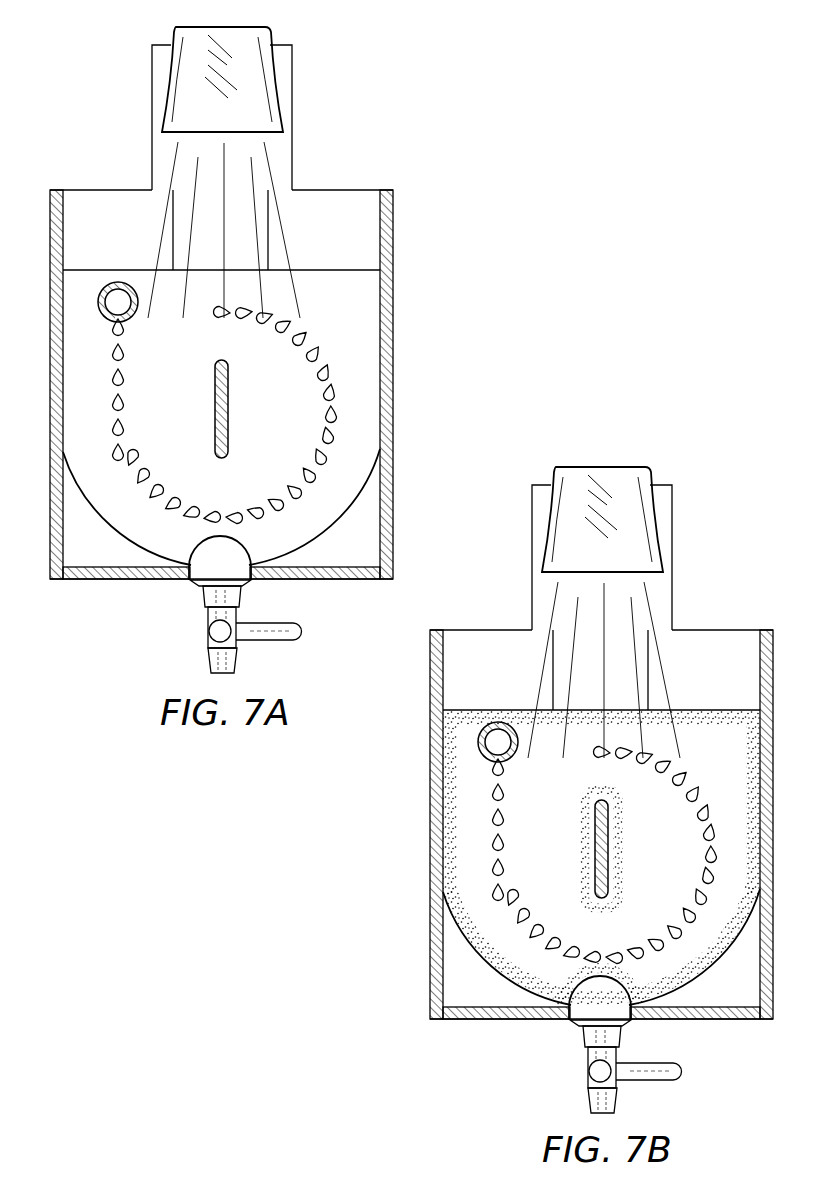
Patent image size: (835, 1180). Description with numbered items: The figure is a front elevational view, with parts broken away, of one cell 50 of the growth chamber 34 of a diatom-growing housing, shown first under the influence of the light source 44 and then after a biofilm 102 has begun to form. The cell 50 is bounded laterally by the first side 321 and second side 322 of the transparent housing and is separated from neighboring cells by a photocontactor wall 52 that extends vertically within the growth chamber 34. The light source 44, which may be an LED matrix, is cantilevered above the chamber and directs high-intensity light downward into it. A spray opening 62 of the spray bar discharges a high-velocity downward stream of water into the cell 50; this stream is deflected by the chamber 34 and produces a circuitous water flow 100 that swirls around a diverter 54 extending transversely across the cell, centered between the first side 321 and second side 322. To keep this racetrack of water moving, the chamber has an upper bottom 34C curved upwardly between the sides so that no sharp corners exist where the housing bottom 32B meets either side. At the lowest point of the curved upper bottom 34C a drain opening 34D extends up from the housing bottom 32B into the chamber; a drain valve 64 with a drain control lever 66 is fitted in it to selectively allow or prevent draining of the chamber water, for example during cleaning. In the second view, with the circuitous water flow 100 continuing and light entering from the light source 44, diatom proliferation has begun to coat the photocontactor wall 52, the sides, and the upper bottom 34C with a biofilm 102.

In FIG. 7A, the light source 44 is at (283, 77).
In FIG. 7B, the light source 44 is at (627, 612).
In FIG. 7A, the second side 322 is at (50, 224).
In FIG. 7B, the second side 322 is at (398, 824).
In FIG. 7A, the first side 321 is at (393, 241).
In FIG. 7B, the first side 321 is at (791, 824).
In FIG. 7A, the growth chamber 34 is at (381, 336).
In FIG. 7A, the cell 50 is at (251, 279).
In FIG. 7B, the cell 50 is at (621, 714).
In FIG. 7B, the photocontactor wall 52 is at (603, 642).
In FIG. 7A, the spray opening 62 is at (115, 322).
In FIG. 7B, the spray opening 62 is at (498, 811).
In FIG. 7A, the diverter 54 is at (215, 418).
In FIG. 7B, the diverter 54 is at (601, 849).
In FIG. 7A, the circuitous water flow 100 is at (333, 430).
In FIG. 7B, the circuitous water flow 100 is at (660, 855).
In FIG. 7B, the biofilm 102 is at (632, 858).
In FIG. 7A, the upper bottom 34C is at (355, 528).
In FIG. 7B, the upper bottom 34C is at (556, 947).
In FIG. 7A, the housing bottom 32B is at (100, 582).
In FIG. 7B, the housing bottom 32B is at (601, 1013).
In FIG. 7A, the drain opening 34D is at (190, 582).
In FIG. 7B, the drain opening 34D is at (600, 1011).
In FIG. 7A, the drain valve 64 is at (208, 645).
In FIG. 7B, the drain valve 64 is at (602, 1080).
In FIG. 7A, the drain control lever 66 is at (280, 640).
In FIG. 7B, the drain control lever 66 is at (649, 1071).